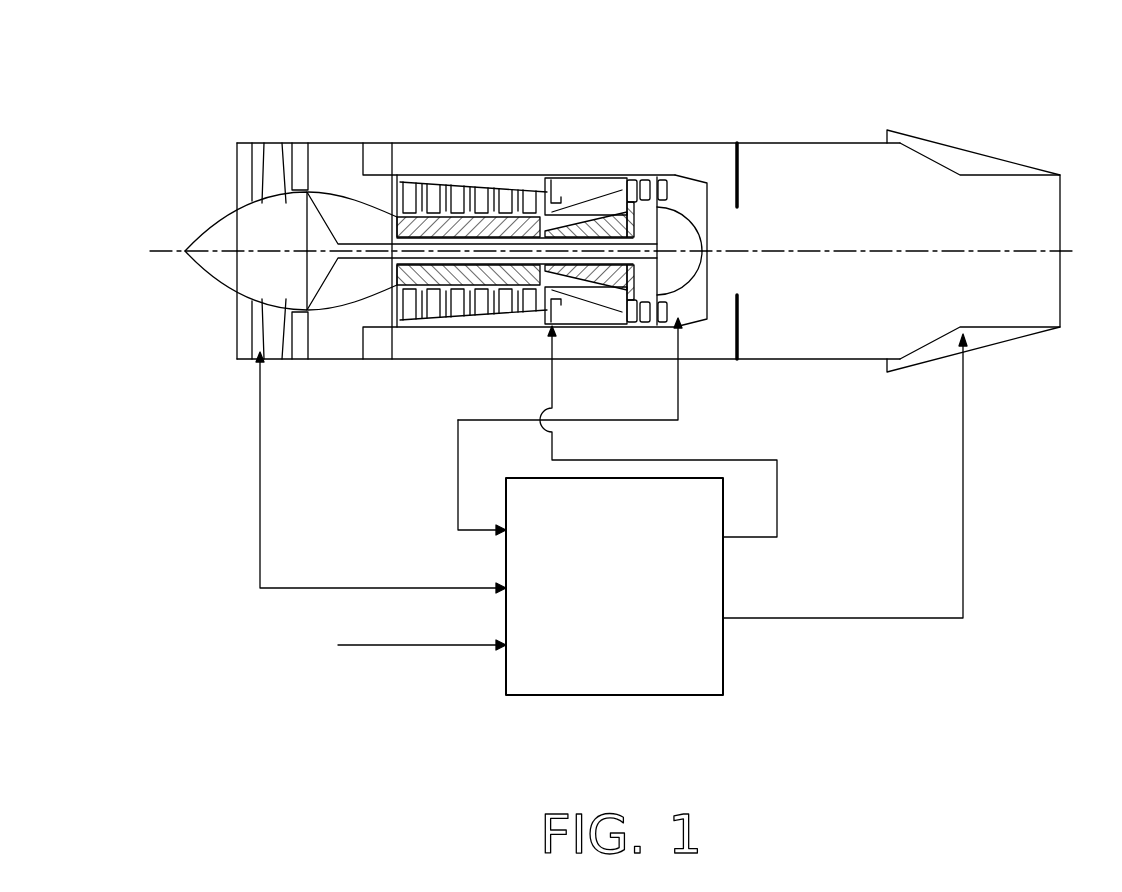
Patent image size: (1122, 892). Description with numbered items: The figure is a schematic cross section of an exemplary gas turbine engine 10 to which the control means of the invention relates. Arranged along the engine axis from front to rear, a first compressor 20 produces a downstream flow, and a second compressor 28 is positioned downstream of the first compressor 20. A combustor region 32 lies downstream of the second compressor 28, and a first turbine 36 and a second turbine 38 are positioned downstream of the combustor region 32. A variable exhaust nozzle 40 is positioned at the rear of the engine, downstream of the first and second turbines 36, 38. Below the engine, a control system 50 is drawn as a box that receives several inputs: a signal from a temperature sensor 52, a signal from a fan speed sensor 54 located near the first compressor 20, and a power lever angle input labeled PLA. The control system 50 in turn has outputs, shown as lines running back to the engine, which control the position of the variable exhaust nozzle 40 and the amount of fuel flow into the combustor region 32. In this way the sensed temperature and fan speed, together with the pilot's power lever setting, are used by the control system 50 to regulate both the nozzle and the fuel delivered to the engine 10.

The gas turbine engine 10 is at (918, 107).
The first compressor 20 is at (268, 362).
The second compressor 28 is at (447, 322).
The combustor region 32 is at (578, 330).
The first turbine 36 is at (630, 330).
The second turbine 38 is at (668, 326).
The variable exhaust nozzle 40 is at (978, 334).
The control system 50 is at (703, 650).
The temperature sensor 52 is at (683, 324).
The fan speed sensor 54 is at (255, 363).